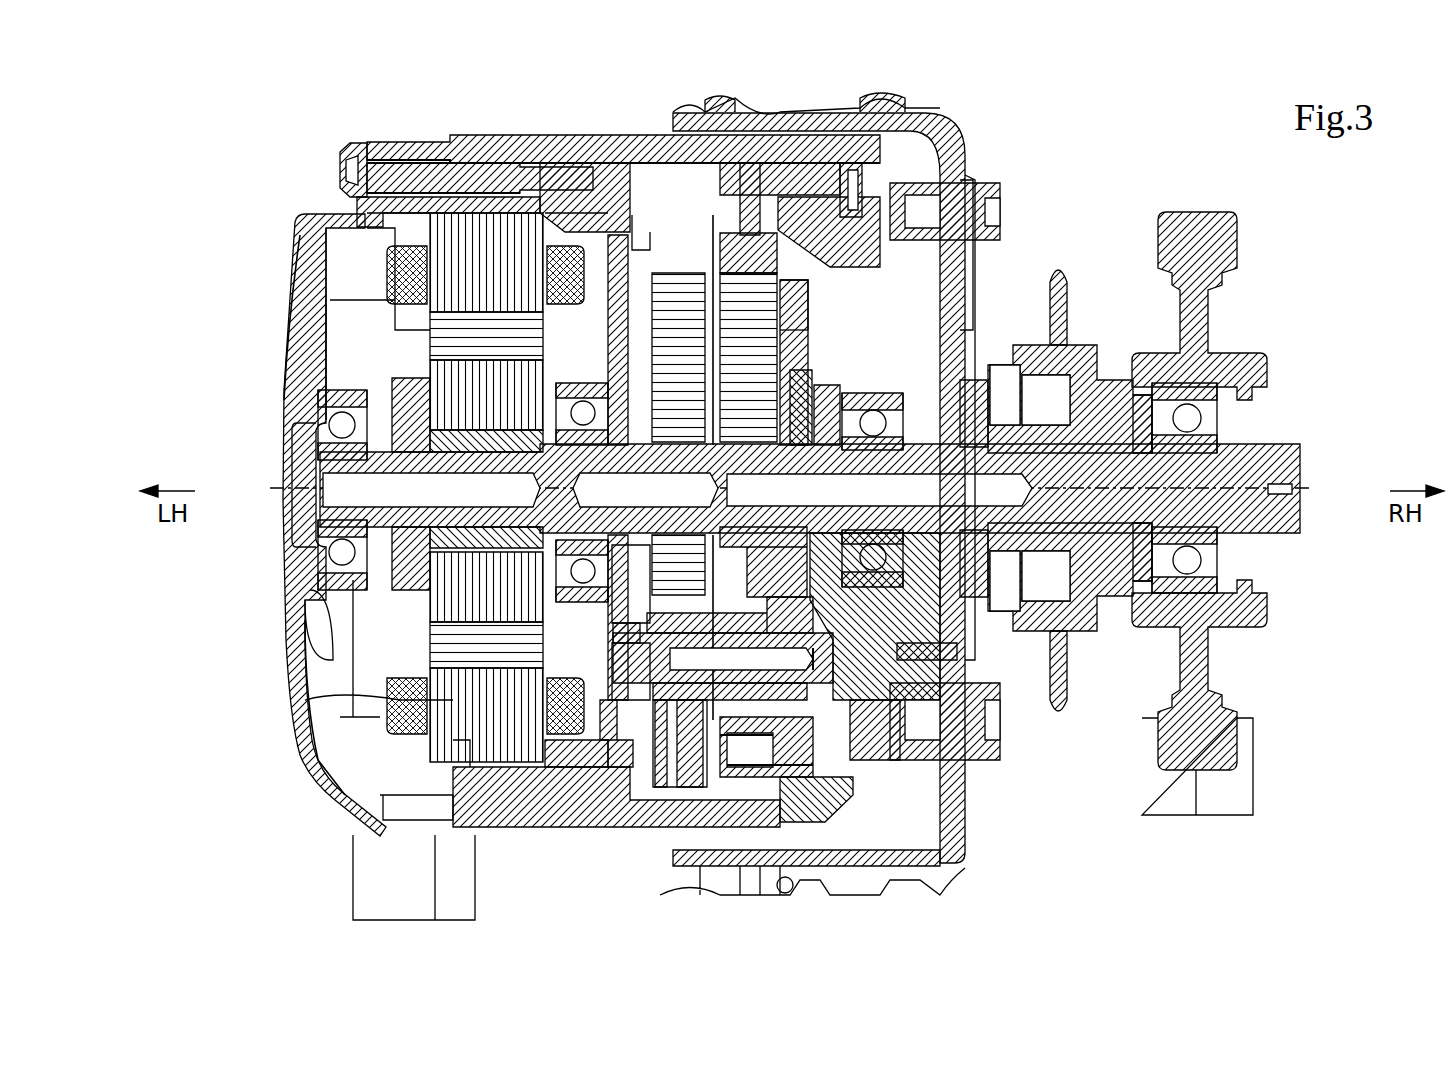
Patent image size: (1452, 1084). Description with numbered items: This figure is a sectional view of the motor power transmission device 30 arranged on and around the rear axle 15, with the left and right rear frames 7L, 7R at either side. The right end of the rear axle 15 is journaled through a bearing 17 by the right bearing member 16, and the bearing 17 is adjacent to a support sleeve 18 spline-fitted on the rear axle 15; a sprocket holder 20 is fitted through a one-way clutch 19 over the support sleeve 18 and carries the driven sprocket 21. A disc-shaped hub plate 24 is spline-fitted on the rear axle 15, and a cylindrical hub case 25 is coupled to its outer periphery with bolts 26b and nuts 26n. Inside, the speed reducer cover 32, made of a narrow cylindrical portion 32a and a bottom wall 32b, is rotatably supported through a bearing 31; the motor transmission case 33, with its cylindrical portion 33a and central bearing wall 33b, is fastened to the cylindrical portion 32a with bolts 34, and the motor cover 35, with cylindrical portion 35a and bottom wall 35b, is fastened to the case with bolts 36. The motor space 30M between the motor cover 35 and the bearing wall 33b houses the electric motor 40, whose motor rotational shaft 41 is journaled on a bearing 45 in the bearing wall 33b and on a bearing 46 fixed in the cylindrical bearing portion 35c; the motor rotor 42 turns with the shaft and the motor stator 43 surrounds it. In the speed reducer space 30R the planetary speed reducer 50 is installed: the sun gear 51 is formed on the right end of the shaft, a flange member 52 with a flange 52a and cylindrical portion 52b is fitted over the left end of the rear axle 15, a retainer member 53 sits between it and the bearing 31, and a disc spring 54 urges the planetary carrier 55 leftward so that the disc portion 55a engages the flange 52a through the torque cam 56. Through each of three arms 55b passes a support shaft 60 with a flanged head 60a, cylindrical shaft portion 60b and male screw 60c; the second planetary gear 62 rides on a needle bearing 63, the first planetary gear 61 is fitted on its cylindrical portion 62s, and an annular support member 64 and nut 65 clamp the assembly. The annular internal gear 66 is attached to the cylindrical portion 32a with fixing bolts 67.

The rear frame 7L is at (420, 905).
The rear frame 7R is at (1200, 815).
The rear axle 15 is at (1295, 465).
The right bearing member 16 is at (1210, 320).
The bearing 17 is at (1195, 560).
The support sleeve 18 is at (1110, 600).
The one-way clutch 19 is at (1030, 375).
The sprocket holder 20 is at (1090, 345).
The driven sprocket 21 is at (1058, 275).
The hub plate 24 is at (970, 330).
The hub case 25 is at (955, 870).
The bolt 26b is at (985, 195).
The nut 26n is at (943, 230).
The motor power transmission device 30 is at (484, 118).
The motor space 30M is at (384, 322).
The speed reducer space 30R is at (708, 205).
The bearing 31 is at (880, 415).
The speed reducer cover 32 is at (865, 461).
The cylindrical portion 32a is at (860, 112).
The bottom wall 32b is at (925, 160).
The motor transmission case 33 is at (618, 163).
The cylindrical portion 33a is at (650, 135).
The bearing wall 33b is at (590, 190).
The bolt 34 is at (862, 175).
The motor cover 35 is at (293, 457).
The cylindrical portion 35a is at (400, 140).
The bottom wall 35b is at (300, 232).
The cylindrical bearing portion 35c is at (306, 620).
The bolt 36 is at (352, 150).
The electric motor 40 is at (360, 372).
The motor rotational shaft 41 is at (322, 470).
The motor rotor 42 is at (460, 600).
The motor stator 43 is at (450, 715).
The bearing 45 is at (580, 380).
The bearing 46 is at (340, 552).
The planetary speed reducer 50 is at (700, 180).
The sun gear 51 is at (555, 735).
The flange member 52 is at (800, 357).
The flange 52a is at (750, 270).
The cylindrical portion 52b is at (748, 370).
The retainer member 53 is at (822, 410).
The disc spring 54 is at (795, 420).
The planetary carrier 55 is at (776, 691).
The disc portion 55a is at (850, 600).
The arm 55b is at (795, 778).
The torque cam 56 is at (930, 665).
The support shaft 60 is at (686, 818).
The flanged head 60a is at (880, 700).
The cylindrical shaft portion 60b is at (690, 820).
The male screw 60c is at (530, 838).
The first planetary gear 61 is at (665, 300).
The second planetary gear 62 is at (720, 300).
The cylindrical portion 62s is at (695, 690).
The needle bearing 63 is at (632, 660).
The annular support member 64 is at (630, 690).
The nut 65 is at (625, 730).
The annular internal gear 66 is at (748, 250).
The fixing bolt 67 is at (830, 780).